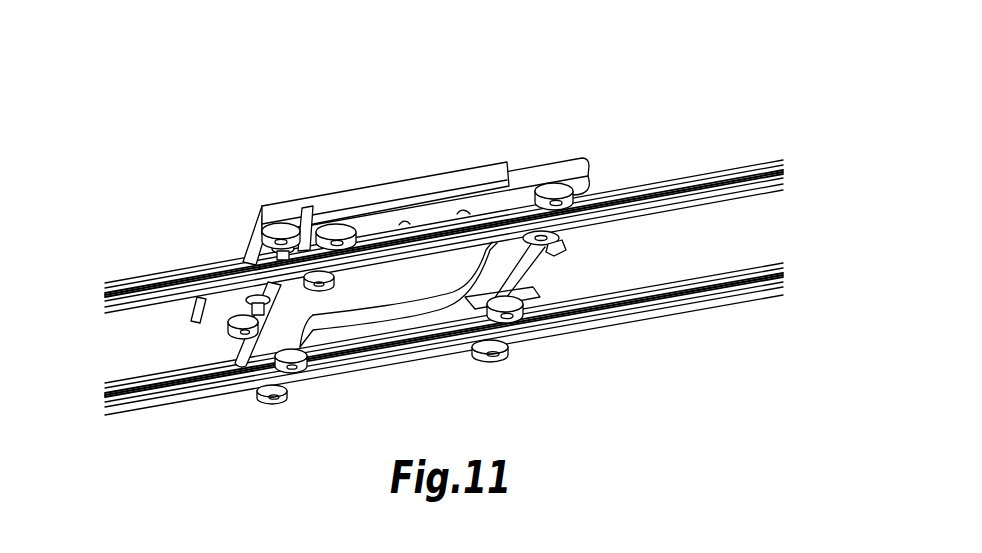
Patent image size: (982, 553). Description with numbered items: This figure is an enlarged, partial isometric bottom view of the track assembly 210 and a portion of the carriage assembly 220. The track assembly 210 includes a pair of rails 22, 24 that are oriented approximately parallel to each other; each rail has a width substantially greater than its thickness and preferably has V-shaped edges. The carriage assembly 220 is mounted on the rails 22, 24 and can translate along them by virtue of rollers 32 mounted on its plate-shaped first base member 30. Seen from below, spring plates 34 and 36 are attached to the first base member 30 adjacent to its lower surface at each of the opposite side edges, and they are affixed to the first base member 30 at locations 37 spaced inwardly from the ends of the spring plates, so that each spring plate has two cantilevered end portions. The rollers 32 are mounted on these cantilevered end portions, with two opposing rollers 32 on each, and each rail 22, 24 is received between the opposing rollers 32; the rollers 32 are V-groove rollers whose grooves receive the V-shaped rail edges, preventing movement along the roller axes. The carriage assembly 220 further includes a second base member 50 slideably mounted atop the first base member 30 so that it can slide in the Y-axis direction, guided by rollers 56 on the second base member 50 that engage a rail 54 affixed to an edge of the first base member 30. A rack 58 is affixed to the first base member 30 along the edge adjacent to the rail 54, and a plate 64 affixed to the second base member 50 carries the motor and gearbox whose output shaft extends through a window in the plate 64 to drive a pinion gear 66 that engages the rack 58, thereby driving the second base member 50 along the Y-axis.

The track assembly 210 is at (790, 115).
The carriage assembly 220 is at (486, 68).
The rail 22 is at (700, 302).
The rail 24 is at (748, 173).
The first base member 30 is at (425, 183).
The rollers 32 is at (343, 228).
The spring plate 34 is at (428, 326).
The spring plate 36 is at (488, 207).
The locations 37 is at (425, 214).
The second base member 50 is at (280, 208).
The rail 54 is at (302, 216).
The rollers 56 is at (270, 246).
The rack 58 is at (238, 356).
The plate 64 is at (193, 317).
The pinion gear 66 is at (223, 334).